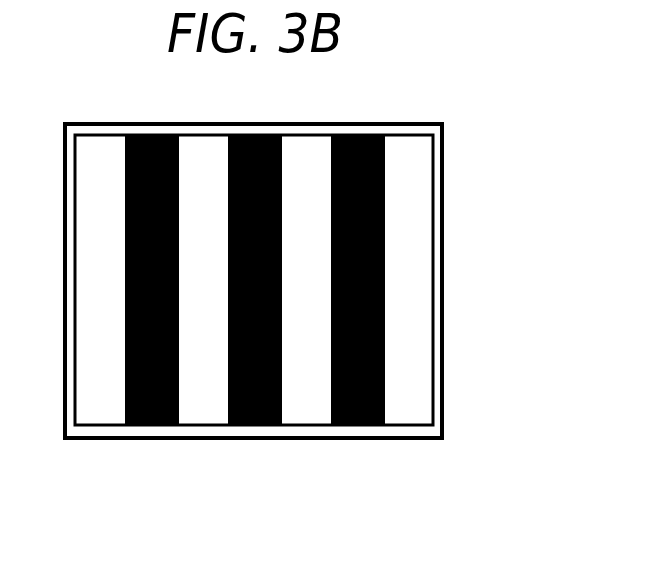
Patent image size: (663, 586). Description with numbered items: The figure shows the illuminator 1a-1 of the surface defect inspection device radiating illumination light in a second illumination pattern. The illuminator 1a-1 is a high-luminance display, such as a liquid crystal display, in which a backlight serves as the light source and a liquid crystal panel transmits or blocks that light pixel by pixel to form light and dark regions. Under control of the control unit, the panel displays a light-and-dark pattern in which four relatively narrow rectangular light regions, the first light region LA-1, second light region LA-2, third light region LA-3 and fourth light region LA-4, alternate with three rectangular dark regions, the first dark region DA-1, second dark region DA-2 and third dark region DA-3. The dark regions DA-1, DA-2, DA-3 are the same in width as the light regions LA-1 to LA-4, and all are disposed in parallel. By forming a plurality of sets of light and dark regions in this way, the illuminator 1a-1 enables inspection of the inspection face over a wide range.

The first illuminator 1a-1 is at (316, 124).
The first dark region DA-1 is at (153, 418).
The second dark region DA-2 is at (253, 418).
The third dark region DA-3 is at (358, 418).
The first light region LA-1 is at (97, 418).
The second light region LA-2 is at (205, 418).
The third light region LA-3 is at (307, 418).
The fourth light region LA-4 is at (412, 418).